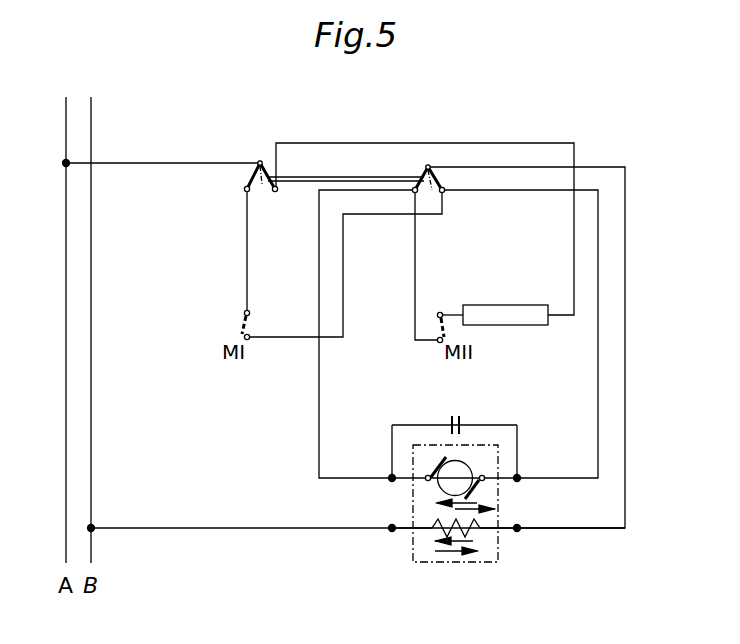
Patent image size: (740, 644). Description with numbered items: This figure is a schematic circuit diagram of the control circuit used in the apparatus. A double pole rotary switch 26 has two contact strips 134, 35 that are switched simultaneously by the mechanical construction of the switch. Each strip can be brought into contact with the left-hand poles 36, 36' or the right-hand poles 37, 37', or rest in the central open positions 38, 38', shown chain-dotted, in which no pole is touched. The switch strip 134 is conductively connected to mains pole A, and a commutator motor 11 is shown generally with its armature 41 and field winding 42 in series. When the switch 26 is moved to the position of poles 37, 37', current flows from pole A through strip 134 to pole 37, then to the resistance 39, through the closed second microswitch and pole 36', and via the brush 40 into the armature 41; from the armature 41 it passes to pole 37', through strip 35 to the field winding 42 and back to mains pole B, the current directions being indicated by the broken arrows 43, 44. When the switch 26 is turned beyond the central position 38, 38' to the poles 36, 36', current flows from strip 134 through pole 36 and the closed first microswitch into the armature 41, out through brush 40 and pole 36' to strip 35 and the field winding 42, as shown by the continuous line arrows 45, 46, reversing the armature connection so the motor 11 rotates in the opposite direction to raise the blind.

The switch strip 134 is at (254, 178).
The pole 36 is at (225, 190).
The pole 37 is at (294, 193).
The central open position 38 is at (264, 197).
The double pole rotary switch 26 is at (347, 177).
The switch strip 35 is at (426, 165).
The pole 36' is at (396, 217).
The pole 37' is at (473, 203).
The central open position 38' is at (445, 209).
The resistance 39 is at (537, 320).
The commutator motor 11 is at (410, 537).
The brush 40 is at (437, 469).
The armature 41 is at (460, 422).
The field winding 42 is at (484, 532).
The broken arrow 43 is at (436, 508).
The broken arrow 44 is at (463, 551).
The continuous line arrow 45 is at (492, 507).
The continuous line arrow 46 is at (445, 543).